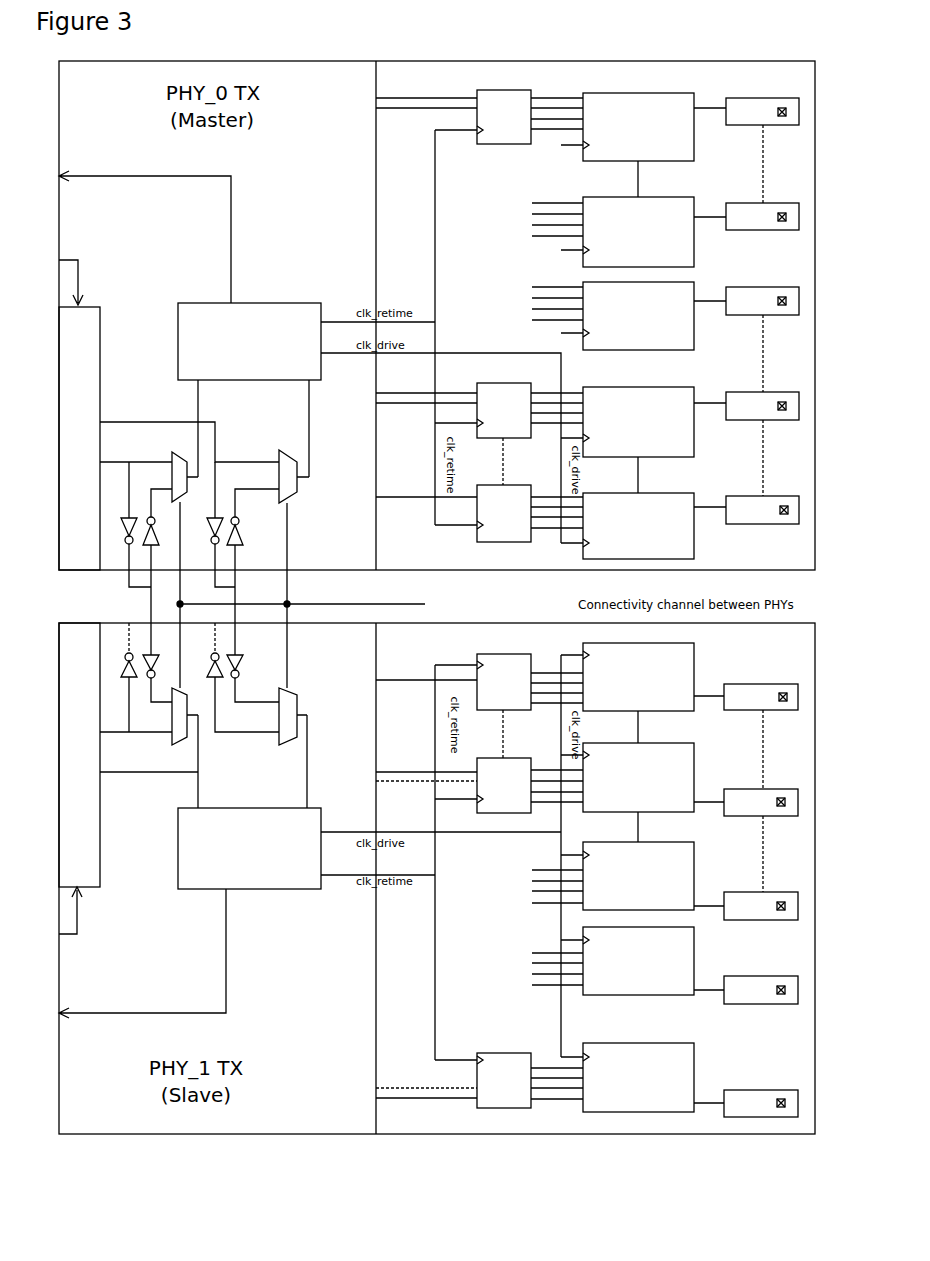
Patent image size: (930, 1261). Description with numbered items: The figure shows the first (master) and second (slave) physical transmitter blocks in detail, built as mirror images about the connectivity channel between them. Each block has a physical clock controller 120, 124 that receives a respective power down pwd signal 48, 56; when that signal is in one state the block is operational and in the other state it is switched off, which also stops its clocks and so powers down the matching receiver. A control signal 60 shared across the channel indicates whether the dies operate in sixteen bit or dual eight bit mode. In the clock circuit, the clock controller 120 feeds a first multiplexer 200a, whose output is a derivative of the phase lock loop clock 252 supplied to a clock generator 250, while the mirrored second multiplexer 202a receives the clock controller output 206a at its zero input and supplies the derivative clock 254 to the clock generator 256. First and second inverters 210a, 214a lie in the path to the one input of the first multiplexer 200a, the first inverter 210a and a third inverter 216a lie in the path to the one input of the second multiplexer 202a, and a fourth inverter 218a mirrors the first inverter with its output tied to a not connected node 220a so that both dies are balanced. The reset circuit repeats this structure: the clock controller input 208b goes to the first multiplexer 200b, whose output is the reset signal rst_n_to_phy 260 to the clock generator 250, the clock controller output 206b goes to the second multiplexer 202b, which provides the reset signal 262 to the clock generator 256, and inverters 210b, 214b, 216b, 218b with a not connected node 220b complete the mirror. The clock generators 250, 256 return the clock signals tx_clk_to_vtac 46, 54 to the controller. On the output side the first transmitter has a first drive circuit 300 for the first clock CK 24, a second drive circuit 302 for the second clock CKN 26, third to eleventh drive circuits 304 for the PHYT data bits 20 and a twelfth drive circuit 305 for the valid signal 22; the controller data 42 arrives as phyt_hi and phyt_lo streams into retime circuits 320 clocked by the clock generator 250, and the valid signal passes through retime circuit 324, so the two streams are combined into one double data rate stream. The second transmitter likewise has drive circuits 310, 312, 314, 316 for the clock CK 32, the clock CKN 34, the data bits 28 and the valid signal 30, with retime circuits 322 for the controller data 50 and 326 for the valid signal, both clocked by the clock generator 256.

The data signal 20 is at (773, 392).
The valid signal 22 is at (771, 496).
The first clock signal CK 24 is at (773, 203).
The second clock signal CKN 26 is at (773, 287).
The data bits 8 to 15 28 is at (745, 1090).
The valid signal 30 is at (767, 684).
The first clock signal CK 32 is at (754, 976).
The second clock signal CKN 34 is at (766, 892).
The data bits 0-7 from controller 42 is at (448, 403).
The clock signal to controller 46 is at (165, 180).
The power down pwd signal 48 is at (79, 270).
The data signal bits 8 to 15 50 is at (443, 1101).
The clock signal to controller 54 is at (229, 958).
The power down pwd signal 56 is at (80, 926).
The control signal 60 is at (538, 602).
The physical clock controller 120 is at (79, 438).
The physical clock controller 124 is at (79, 755).
The first multiplexer 200a is at (171, 455).
The first multiplexer 200b is at (292, 502).
The second multiplexer 202a is at (176, 741).
The second multiplexer 202b is at (287, 694).
The clock controller output 206a is at (136, 599).
The clock controller output 206b is at (124, 773).
The first input 208b is at (189, 442).
The first inverter 210a is at (137, 520).
The first inverter 210b is at (223, 520).
The second inverter 214a is at (155, 538).
The second inverter 214b is at (239, 538).
The third inverter 216a is at (152, 653).
The third inverter 216b is at (236, 657).
The fourth inverter 218a is at (124, 677).
The fourth inverter 218b is at (207, 667).
The not connected NC node 220a is at (124, 611).
The not connected NC node 220b is at (210, 609).
The clock generator 250 is at (249, 341).
The derivative of phase lock loop clock 252 is at (194, 407).
The derivative of phase lock loop clock 254 is at (207, 785).
The clock generator 256 is at (249, 848).
The reset signal rst_n_to_phy 260 is at (305, 479).
The reset signal rst_n_to_phy 262 is at (313, 800).
The first drive circuit 300 is at (623, 232).
The second drive circuit 302 is at (623, 316).
The third to eleventh drive circuits 304 is at (643, 275).
The twelfth drive circuit 305 is at (643, 526).
The first drive circuit 310 is at (622, 961).
The second drive circuit 312 is at (622, 876).
The third to eleventh drive circuits 314 is at (642, 927).
The twelfth drive circuit 316 is at (642, 677).
The retime circuit 320 is at (509, 264).
The retime circuit 322 is at (509, 933).
The retime circuit 324 is at (479, 511).
The retime circuit 326 is at (479, 682).